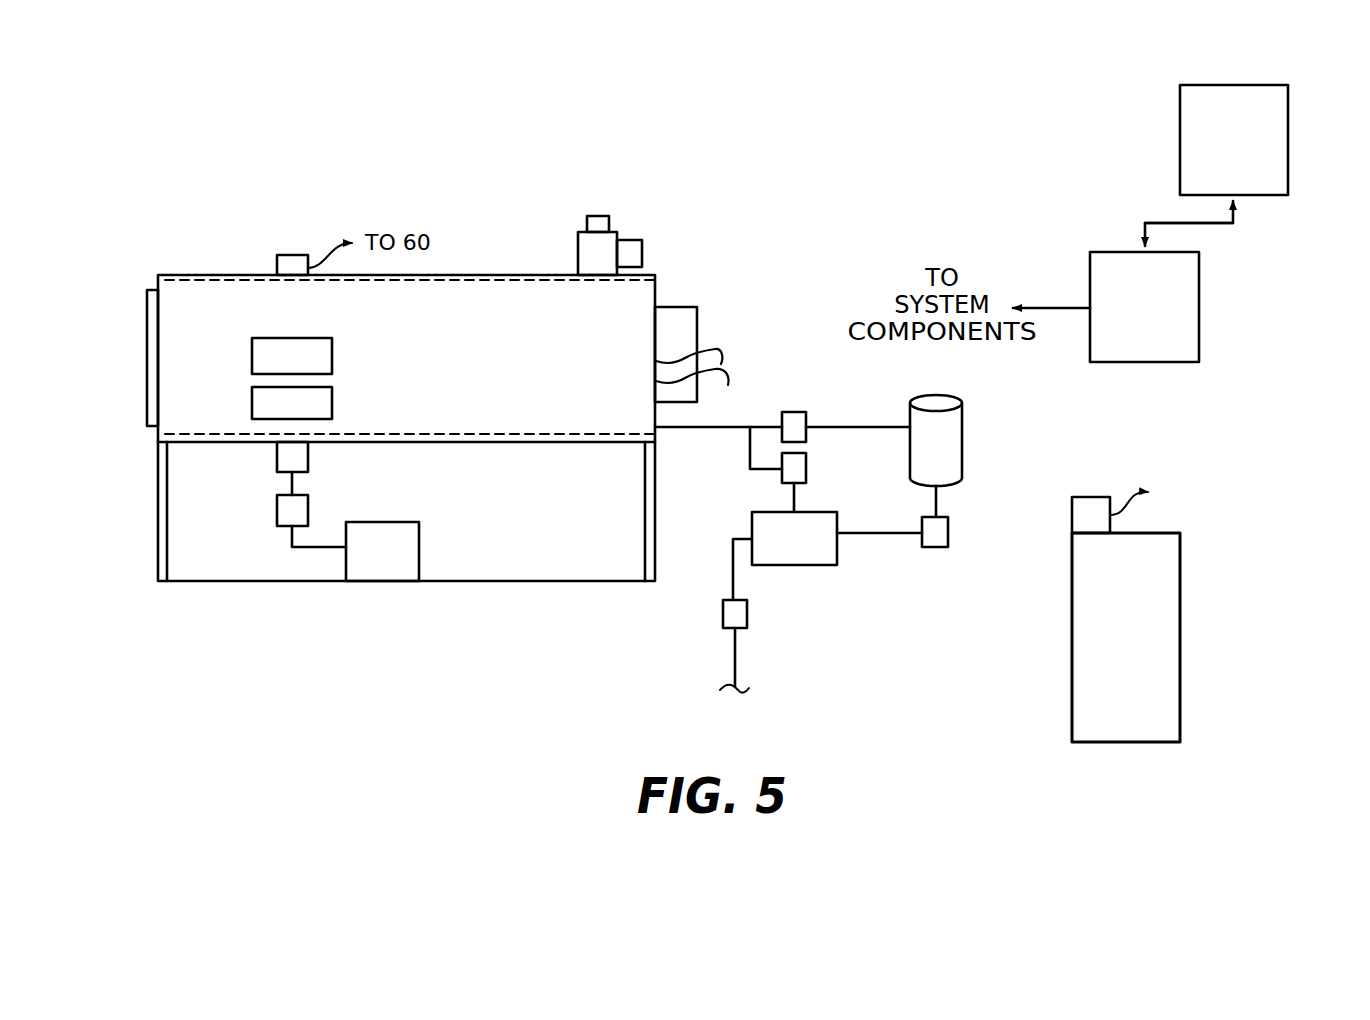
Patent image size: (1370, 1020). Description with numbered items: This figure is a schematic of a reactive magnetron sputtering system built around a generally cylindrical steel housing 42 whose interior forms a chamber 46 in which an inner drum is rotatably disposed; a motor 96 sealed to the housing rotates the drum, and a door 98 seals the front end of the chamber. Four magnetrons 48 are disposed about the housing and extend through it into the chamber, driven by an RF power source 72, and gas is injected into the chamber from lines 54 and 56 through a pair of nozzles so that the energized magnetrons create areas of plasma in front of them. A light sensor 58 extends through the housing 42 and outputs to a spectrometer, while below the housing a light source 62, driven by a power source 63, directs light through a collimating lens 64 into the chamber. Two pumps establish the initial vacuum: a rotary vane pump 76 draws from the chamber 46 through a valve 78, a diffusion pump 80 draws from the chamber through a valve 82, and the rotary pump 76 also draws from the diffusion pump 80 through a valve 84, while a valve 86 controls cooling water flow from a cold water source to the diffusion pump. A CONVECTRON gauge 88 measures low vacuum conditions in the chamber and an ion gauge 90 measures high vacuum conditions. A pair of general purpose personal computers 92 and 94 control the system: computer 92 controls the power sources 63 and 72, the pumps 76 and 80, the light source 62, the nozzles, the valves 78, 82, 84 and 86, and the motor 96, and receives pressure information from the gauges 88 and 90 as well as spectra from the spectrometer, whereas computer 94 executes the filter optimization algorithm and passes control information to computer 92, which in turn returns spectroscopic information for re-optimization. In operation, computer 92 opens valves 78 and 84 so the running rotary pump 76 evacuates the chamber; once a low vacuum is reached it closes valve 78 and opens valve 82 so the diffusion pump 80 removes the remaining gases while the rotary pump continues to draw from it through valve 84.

The steel housing 42 is at (189, 275).
The chamber 46 is at (512, 430).
The magnetrons 48 is at (332, 352).
The gas line 54 is at (708, 373).
The gas line 56 is at (700, 353).
The light sensor 58 is at (278, 257).
The light source 62 is at (277, 512).
The power source 63 is at (419, 540).
The collimating lens 64 is at (277, 455).
The RF power source 72 is at (1180, 595).
The rotary vane pump 76 is at (962, 427).
The valve 78 is at (795, 412).
The diffusion pump 80 is at (791, 565).
The valve 82 is at (806, 470).
The valve 84 is at (948, 532).
The valve 86 is at (723, 614).
The VARIAN CONVECTRON gauge 88 is at (600, 216).
The ion gauge 90 is at (630, 240).
The personal computer 92 is at (1199, 300).
The personal computer 94 is at (1288, 135).
The motor 96 is at (672, 306).
The door 98 is at (147, 343).